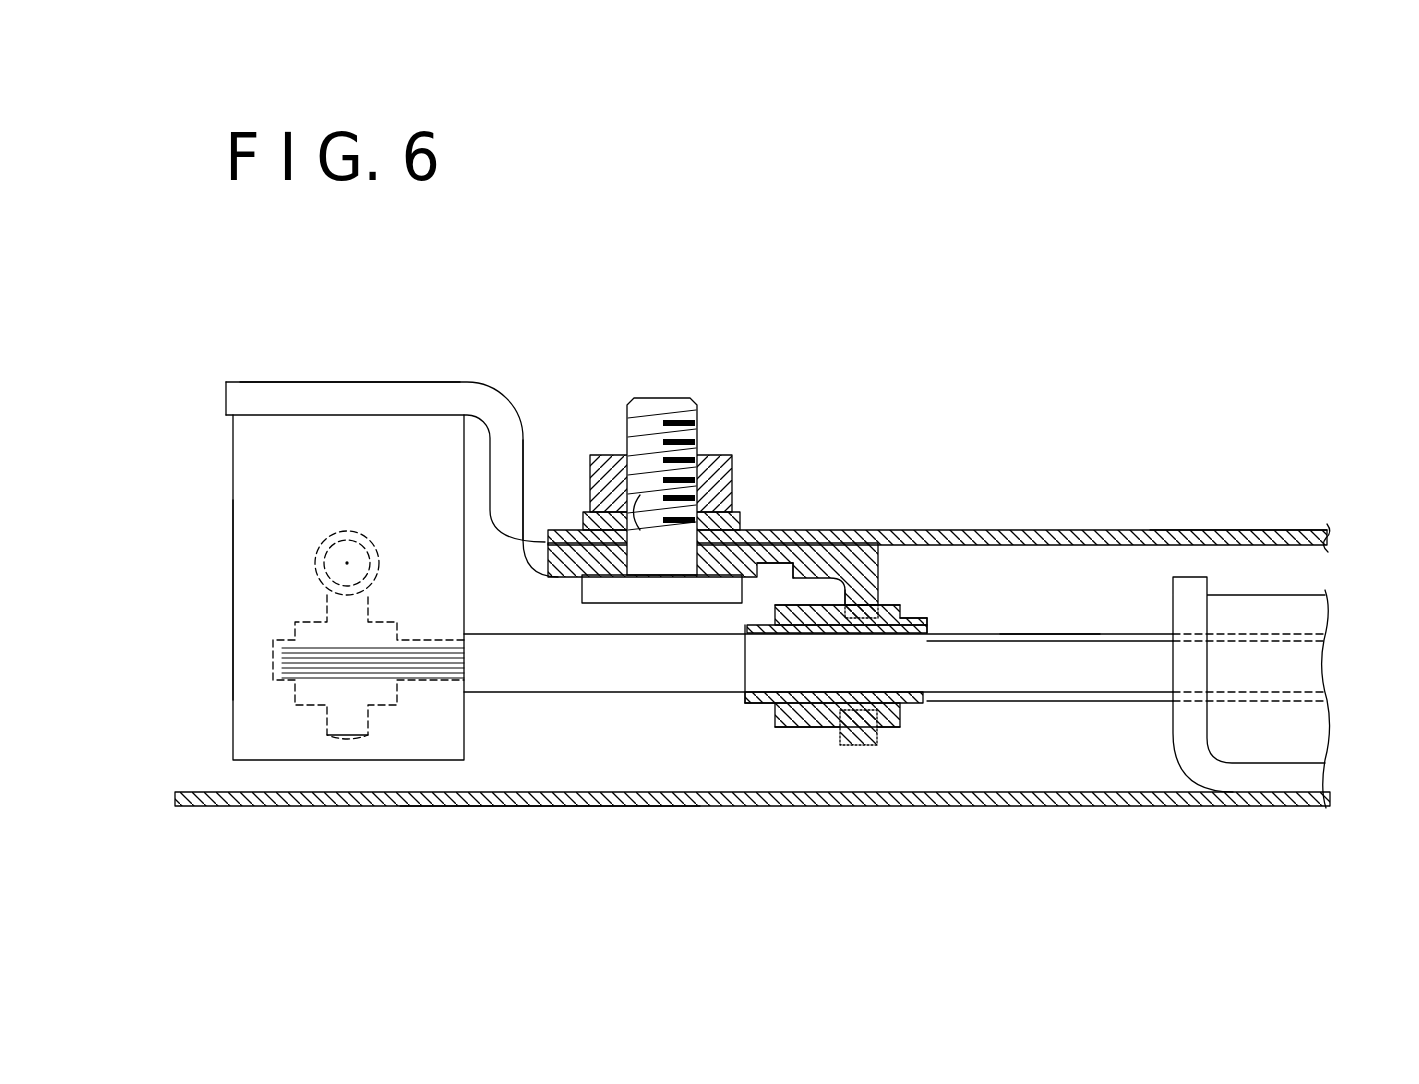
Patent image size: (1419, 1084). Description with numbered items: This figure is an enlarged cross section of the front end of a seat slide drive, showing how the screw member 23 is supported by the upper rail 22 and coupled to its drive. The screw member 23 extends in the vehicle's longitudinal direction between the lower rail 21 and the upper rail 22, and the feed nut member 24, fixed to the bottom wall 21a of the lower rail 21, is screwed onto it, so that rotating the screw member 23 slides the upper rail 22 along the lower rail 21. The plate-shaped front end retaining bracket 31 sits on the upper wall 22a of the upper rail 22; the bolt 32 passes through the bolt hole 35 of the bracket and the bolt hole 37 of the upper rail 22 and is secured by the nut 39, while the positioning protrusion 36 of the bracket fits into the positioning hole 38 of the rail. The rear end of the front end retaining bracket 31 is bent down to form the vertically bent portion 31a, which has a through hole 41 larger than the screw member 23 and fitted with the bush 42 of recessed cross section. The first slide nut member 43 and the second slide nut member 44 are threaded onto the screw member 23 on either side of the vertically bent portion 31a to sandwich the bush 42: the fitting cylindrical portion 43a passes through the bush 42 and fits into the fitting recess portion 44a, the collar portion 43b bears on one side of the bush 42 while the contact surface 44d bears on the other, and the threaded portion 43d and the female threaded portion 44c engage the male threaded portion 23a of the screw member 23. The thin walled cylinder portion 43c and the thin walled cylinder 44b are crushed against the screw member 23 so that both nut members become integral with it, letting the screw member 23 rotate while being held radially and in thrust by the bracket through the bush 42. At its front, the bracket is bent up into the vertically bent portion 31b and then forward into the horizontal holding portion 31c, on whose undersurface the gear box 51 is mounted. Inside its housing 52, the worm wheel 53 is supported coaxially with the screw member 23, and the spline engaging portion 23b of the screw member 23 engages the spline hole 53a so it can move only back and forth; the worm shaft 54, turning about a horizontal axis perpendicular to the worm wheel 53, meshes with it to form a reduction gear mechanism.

The lower rail 21 is at (1066, 812).
The bottom wall 21a is at (545, 810).
The upper rail 22 is at (1133, 526).
The upper wall 22a is at (1200, 540).
The screw member 23 is at (1105, 685).
The male threaded portion 23a is at (1047, 640).
The spline engaging portion 23b is at (437, 685).
The feed nut member 24 is at (1312, 612).
The front end retaining bracket 31 is at (468, 378).
The vertically bent portion 31a is at (857, 747).
The vertically bent portion 31b is at (512, 470).
The horizontal holding portion 31c is at (350, 392).
The bolt 32 is at (643, 590).
The bolt hole 35 is at (693, 562).
The positioning protrusion 36 is at (765, 540).
The bolt hole 37 is at (640, 505).
The positioning hole 38 is at (782, 540).
The nut 39 is at (718, 455).
The through hole 41 is at (900, 725).
The bush 42 is at (858, 603).
The first slide nut member 43 is at (910, 602).
The fitting cylindrical portion 43a is at (885, 600).
The collar portion 43b is at (888, 727).
The thin walled cylinder portion 43c is at (922, 614).
The threaded portion 43d is at (888, 632).
The second slide nut member 44 is at (790, 737).
The fitting recess portion 44a is at (842, 703).
The thin walled cylinder 44b is at (760, 707).
The female threaded portion 44c is at (823, 582).
The contact surface 44d is at (858, 592).
The gear box 51 is at (230, 505).
The housing 52 is at (237, 626).
The worm wheel 53 is at (320, 715).
The spline hole 53a is at (352, 662).
The worm shaft 54 is at (315, 560).